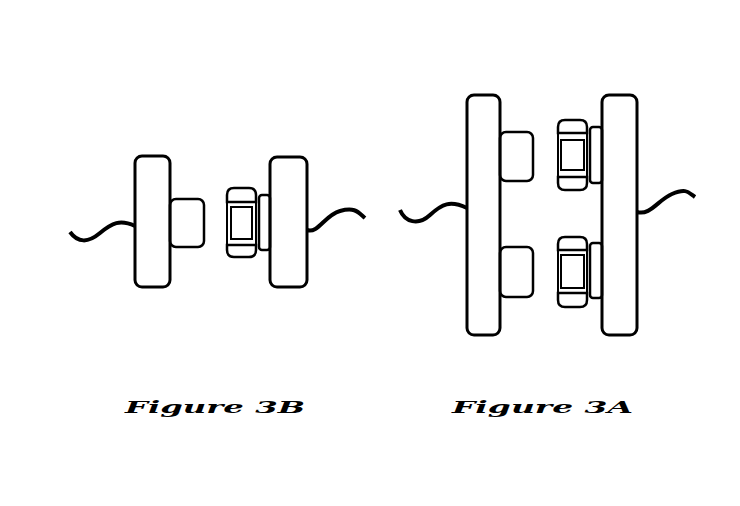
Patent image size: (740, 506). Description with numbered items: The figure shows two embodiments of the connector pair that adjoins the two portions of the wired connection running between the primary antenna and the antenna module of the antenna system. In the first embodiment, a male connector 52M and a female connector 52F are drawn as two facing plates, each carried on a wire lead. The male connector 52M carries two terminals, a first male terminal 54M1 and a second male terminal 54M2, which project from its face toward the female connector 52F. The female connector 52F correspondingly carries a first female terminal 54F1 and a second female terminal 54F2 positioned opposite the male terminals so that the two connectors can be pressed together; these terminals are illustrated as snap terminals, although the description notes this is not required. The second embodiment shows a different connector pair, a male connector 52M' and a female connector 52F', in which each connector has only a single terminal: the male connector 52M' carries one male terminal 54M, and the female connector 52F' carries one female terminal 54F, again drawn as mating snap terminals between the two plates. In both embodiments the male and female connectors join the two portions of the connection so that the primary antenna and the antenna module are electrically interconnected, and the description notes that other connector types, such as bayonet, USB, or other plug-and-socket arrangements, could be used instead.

In FIG. 3B, the male connector (alternate embodiment) 52M' is at (98, 212).
In FIG. 3B, the male terminal 54M is at (216, 178).
In FIG. 3B, the female terminal 54F is at (238, 188).
In FIG. 3B, the female connector (alternate embodiment) 52F' is at (326, 212).
In FIG. 3A, the male connector 52M is at (435, 204).
In FIG. 3A, the first male terminal 54M1 is at (547, 115).
In FIG. 3A, the second male terminal 54M2 is at (548, 229).
In FIG. 3A, the first female terminal 54F1 is at (566, 120).
In FIG. 3A, the second female terminal 54F2 is at (563, 307).
In FIG. 3A, the female connector 52F is at (654, 203).